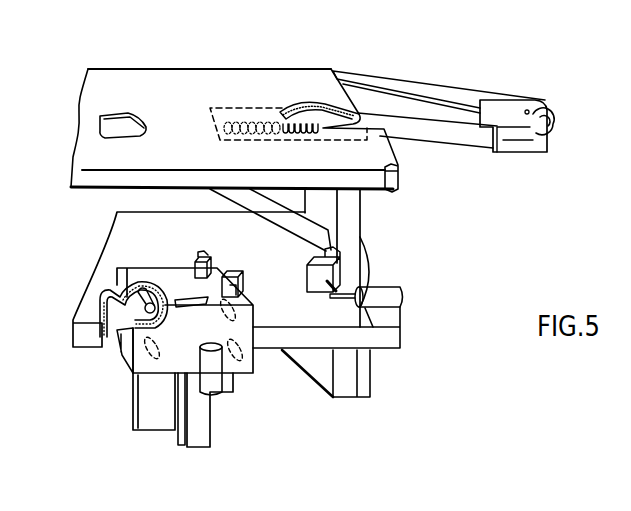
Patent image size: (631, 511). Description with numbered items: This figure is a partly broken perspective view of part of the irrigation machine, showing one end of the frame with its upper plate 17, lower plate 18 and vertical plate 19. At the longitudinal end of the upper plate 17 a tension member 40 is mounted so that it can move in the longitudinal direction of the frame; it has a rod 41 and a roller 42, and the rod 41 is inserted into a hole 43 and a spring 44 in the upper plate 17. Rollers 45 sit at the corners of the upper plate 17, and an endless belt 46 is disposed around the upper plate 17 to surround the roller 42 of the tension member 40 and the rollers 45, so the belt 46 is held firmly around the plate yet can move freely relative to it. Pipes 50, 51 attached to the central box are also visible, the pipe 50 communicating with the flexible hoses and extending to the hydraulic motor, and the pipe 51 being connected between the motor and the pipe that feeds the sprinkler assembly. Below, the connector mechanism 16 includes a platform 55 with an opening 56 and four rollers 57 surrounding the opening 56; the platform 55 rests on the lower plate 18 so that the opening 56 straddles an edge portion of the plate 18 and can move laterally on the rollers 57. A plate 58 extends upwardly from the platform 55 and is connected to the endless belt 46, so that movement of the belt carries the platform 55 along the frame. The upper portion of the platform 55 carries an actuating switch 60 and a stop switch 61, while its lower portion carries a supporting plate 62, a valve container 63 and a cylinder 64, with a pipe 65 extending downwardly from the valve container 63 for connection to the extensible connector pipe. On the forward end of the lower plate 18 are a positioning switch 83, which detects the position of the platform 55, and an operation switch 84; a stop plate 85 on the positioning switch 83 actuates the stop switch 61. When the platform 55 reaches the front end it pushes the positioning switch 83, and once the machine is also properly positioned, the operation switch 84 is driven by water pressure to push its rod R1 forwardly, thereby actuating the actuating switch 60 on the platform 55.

The connector mechanism 16 is at (115, 411).
The upper plate 17 is at (147, 77).
The lower plate 18 is at (117, 226).
The vertical plate 19 is at (353, 213).
The tension member 40 is at (468, 76).
The rod 41 is at (443, 122).
The roller 42 is at (557, 118).
The hole 43 is at (301, 110).
The spring 44 is at (283, 108).
The roller 45 is at (399, 178).
The endless belt 46 is at (387, 83).
The pipe 50 is at (107, 114).
The pipe 51 is at (110, 132).
The platform 55 is at (155, 353).
The opening 56 is at (100, 308).
The roller 57 is at (142, 302).
The plate 58 is at (186, 307).
The actuating switch 60 is at (240, 280).
The stop switch 61 is at (203, 256).
The supporting plate 62 is at (160, 424).
The valve container 63 is at (223, 384).
The cylinder 64 is at (178, 437).
The pipe 65 is at (203, 438).
The positioning switch 83 is at (307, 263).
The operation switch 84 is at (403, 283).
The stop plate 85 is at (373, 262).
The rod R1 is at (348, 293).